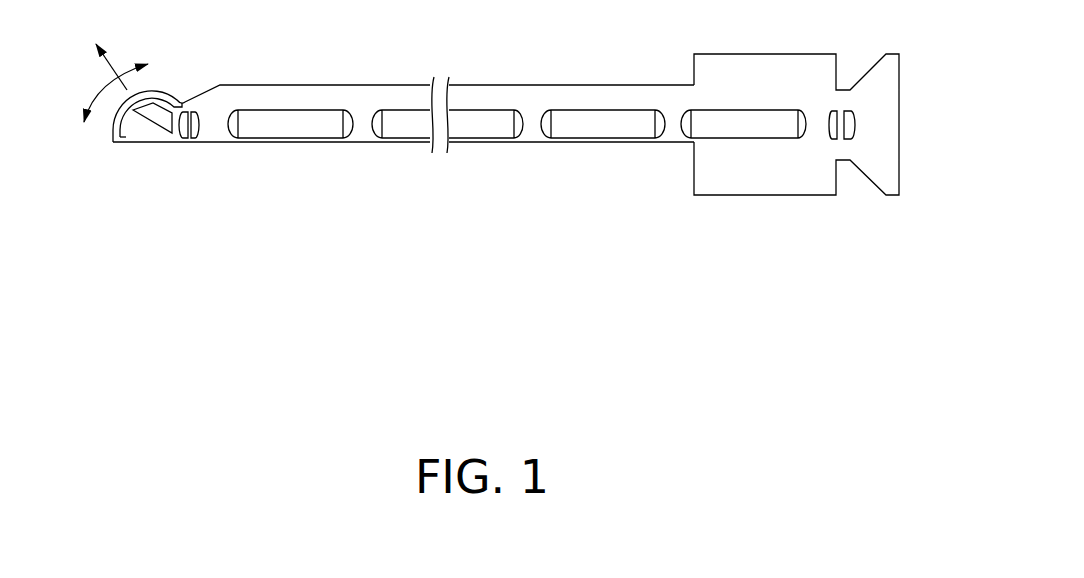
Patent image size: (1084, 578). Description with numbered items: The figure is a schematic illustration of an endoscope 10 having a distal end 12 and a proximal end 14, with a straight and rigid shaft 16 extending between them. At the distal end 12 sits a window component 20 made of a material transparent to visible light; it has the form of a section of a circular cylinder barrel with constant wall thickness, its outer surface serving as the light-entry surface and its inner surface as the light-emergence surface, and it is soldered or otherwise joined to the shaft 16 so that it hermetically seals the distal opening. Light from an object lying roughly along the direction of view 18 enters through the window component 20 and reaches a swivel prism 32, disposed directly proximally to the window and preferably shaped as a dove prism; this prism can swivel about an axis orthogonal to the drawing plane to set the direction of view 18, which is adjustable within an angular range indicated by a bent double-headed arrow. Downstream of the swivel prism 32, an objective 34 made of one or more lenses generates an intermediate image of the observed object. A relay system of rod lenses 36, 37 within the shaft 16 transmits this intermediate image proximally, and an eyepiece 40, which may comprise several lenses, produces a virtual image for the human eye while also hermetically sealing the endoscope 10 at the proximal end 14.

The endoscope 10 is at (476, 189).
The distal end 12 is at (181, 234).
The proximal end 14 is at (796, 215).
The shaft 16 is at (477, 87).
The direction of view 18 is at (115, 65).
The window component 20 is at (113, 132).
The swivel prism 32 is at (153, 120).
The objective 34 is at (197, 137).
The rod lens 36 is at (478, 137).
The rod lens 37 is at (620, 137).
The eyepiece 40 is at (845, 138).